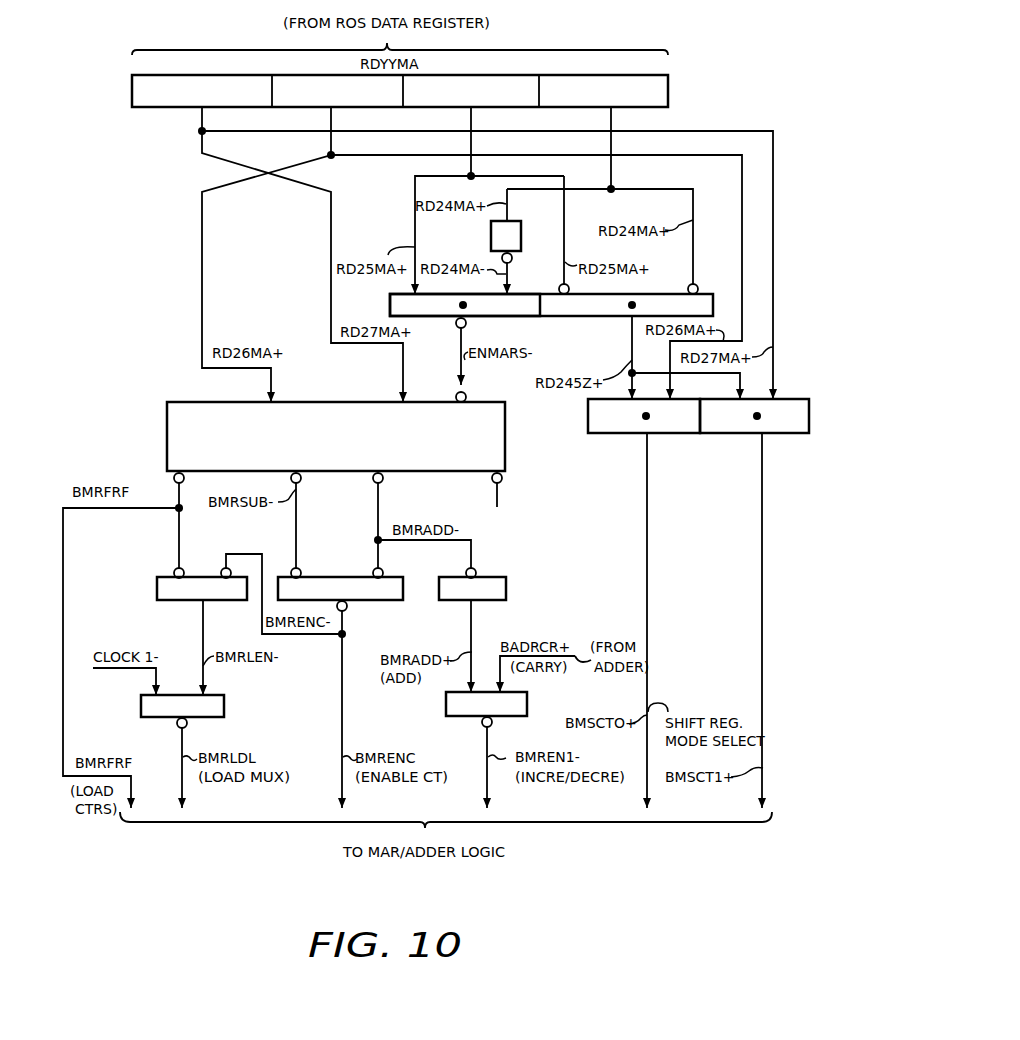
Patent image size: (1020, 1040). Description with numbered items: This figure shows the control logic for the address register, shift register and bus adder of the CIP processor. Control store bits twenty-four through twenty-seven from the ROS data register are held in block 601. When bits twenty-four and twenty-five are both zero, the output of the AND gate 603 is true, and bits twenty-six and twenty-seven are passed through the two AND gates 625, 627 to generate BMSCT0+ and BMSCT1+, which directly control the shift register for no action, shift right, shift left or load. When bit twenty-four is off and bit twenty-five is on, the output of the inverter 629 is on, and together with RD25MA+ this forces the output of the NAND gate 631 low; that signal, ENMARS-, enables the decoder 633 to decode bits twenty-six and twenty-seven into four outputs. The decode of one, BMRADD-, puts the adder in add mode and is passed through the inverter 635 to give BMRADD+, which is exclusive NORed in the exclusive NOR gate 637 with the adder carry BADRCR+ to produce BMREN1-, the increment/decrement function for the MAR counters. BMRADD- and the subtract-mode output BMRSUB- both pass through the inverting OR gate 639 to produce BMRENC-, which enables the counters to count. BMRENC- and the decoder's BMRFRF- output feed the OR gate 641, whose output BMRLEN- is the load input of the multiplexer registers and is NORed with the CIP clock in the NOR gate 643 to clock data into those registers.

The block 601 is at (670, 89).
The inverter 629 is at (491, 236).
The AND gate 603 is at (586, 317).
The NAND gate 631 is at (431, 317).
The AND gate 625 is at (623, 435).
The AND gate 627 is at (747, 433).
The decoder 633 is at (506, 471).
The OR gate 641 is at (160, 577).
The OR gate 639 is at (357, 578).
The inverter 635 is at (507, 577).
The NOR gate 643 is at (225, 706).
The exclusive NOR gate 637 is at (446, 705).